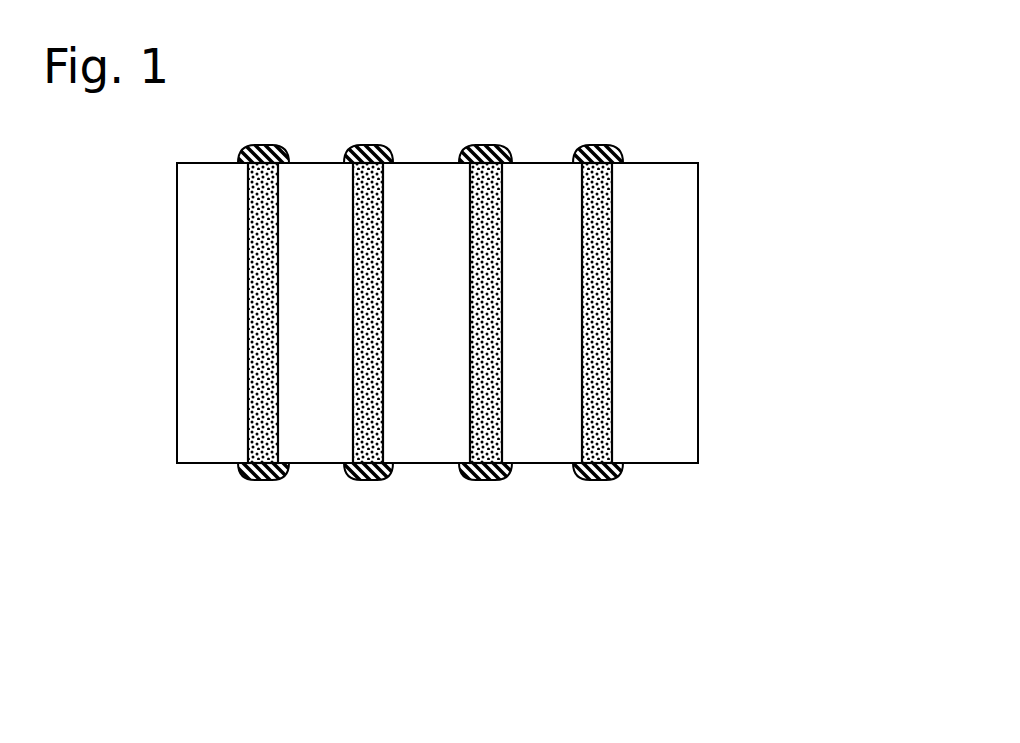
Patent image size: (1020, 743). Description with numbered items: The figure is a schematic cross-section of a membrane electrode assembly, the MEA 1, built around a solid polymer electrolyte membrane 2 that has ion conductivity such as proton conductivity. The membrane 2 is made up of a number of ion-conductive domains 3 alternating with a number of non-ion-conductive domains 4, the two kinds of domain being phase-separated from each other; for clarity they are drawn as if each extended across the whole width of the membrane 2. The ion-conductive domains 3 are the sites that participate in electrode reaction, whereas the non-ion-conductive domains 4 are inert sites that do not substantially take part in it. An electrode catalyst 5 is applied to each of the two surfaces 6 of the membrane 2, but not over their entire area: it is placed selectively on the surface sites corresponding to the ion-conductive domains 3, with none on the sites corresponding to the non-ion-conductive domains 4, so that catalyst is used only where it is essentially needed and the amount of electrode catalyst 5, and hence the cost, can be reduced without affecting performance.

The MEA 1 is at (455, 306).
The solid polymer electrolyte membrane 2 is at (725, 325).
The ion-conductive domains 3 is at (248, 300).
The non-ion-conductive domains 4 is at (321, 432).
The electrode catalyst 5 is at (372, 147).
The surfaces 6 is at (535, 125).